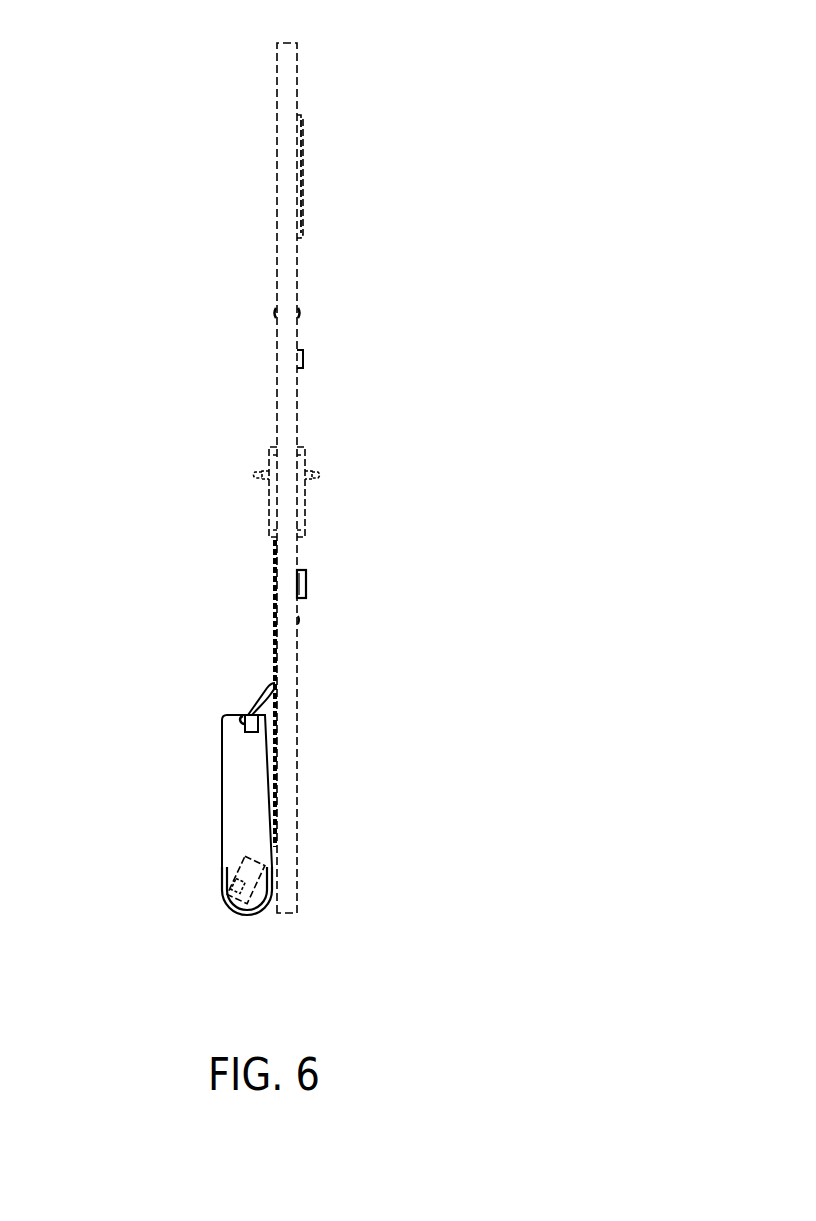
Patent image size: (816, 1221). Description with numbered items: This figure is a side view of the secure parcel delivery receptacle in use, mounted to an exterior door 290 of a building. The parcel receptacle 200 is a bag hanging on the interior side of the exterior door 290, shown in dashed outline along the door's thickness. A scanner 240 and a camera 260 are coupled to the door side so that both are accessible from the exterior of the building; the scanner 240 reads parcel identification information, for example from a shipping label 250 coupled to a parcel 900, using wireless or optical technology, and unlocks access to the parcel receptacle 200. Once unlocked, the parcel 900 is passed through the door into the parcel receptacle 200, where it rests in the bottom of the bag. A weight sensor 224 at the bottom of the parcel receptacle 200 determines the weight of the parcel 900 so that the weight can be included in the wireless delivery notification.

The exterior door 290 is at (285, 78).
The camera 260 is at (303, 358).
The scanner 240 is at (306, 583).
The parcel receptacle 200 is at (228, 763).
The parcel 900 is at (232, 872).
The shipping label 250 is at (237, 892).
The weight sensor 224 is at (242, 915).